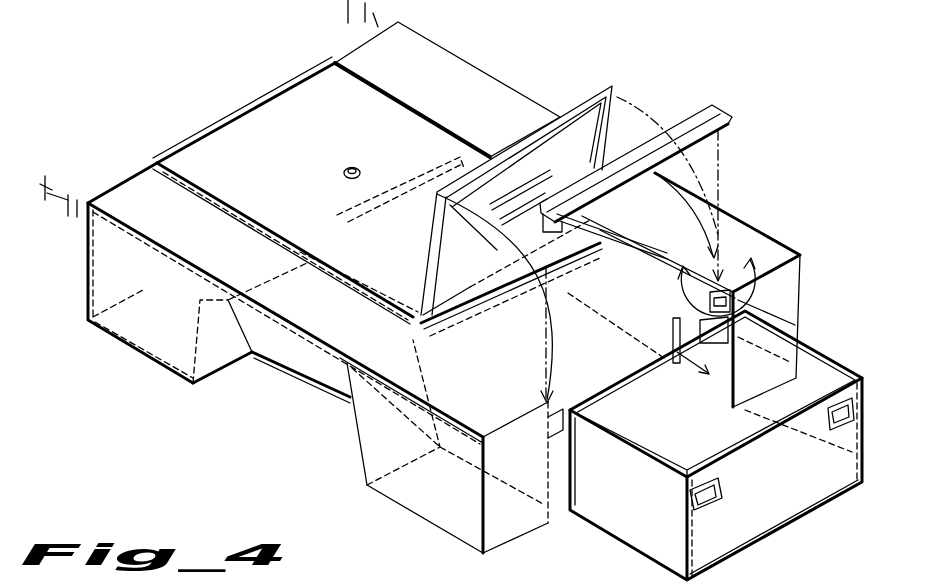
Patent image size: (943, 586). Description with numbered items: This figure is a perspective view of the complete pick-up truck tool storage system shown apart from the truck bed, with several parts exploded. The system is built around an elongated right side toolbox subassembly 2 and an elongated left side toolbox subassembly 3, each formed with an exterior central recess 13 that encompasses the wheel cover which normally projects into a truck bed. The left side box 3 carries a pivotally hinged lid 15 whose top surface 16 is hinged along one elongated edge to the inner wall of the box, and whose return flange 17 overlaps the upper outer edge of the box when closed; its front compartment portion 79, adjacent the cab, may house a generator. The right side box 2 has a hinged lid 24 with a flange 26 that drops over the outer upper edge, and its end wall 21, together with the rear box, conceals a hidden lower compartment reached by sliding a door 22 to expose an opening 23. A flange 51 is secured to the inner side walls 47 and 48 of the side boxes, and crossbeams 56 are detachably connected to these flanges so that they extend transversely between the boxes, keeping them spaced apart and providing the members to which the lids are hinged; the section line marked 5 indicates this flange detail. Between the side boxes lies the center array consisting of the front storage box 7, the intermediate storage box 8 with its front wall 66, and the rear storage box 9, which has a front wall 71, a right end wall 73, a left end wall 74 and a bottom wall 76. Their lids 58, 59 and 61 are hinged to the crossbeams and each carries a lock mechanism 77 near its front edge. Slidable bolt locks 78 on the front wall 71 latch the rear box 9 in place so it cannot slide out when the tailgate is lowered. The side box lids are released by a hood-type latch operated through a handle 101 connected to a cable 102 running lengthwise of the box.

The right side toolbox subassembly 2 is at (470, 64).
The left side toolbox subassembly 3 is at (119, 180).
The section line 5- 5 is at (709, 223).
The front storage box 7 is at (313, 130).
The intermediate storage box 8 is at (404, 255).
The rear storage box 9 is at (640, 512).
The central recess 13 is at (246, 364).
The pivotally hinged lid 15 is at (133, 195).
The top surface 16 is at (182, 243).
The return flange 17 is at (185, 268).
The end wall 21 is at (796, 273).
The door 22 is at (693, 367).
The opening 23 is at (723, 356).
The hinged lid 24 is at (762, 250).
The flange 26 is at (800, 256).
The inner side wall 47 is at (640, 254).
The inner side wall 48 is at (518, 360).
The flange 51 is at (705, 296).
The crossbeam 56 is at (712, 106).
The lid 58 is at (374, 130).
The lid 59 is at (373, 265).
The lid 61 is at (600, 95).
The front wall 66 is at (486, 328).
The front wall 71 is at (763, 489).
The right end wall 73 is at (812, 360).
The left end wall 74 is at (640, 496).
The bottom wall 76 is at (778, 542).
The lock mechanism 77 is at (344, 172).
The slidable bolt lock 78 is at (714, 502).
The compartment portion 79 is at (110, 280).
The handle 101 is at (47, 190).
The cable 102 is at (58, 197).